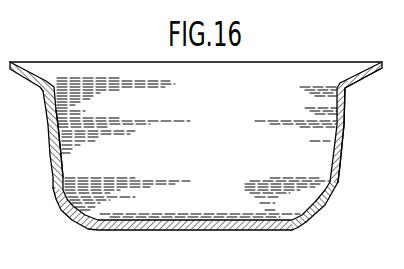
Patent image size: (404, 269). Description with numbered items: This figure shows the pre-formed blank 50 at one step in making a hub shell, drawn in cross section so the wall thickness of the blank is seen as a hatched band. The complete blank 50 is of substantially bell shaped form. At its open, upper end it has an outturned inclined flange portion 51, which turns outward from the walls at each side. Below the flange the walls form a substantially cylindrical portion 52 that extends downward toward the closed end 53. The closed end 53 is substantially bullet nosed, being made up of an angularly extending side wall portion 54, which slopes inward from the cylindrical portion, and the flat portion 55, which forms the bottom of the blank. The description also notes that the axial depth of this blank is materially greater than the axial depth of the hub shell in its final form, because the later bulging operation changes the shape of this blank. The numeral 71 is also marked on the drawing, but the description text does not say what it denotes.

The pre-formed blank 50 is at (82, 68).
The outturned inclined flange portion 51 is at (22, 67).
The substantially cylindrical portion 52 is at (47, 123).
The inner wall surface 71 is at (55, 152).
The closed end 53 is at (296, 229).
The angularly extending side wall portion 54 is at (320, 201).
The flat portion 55 is at (207, 230).